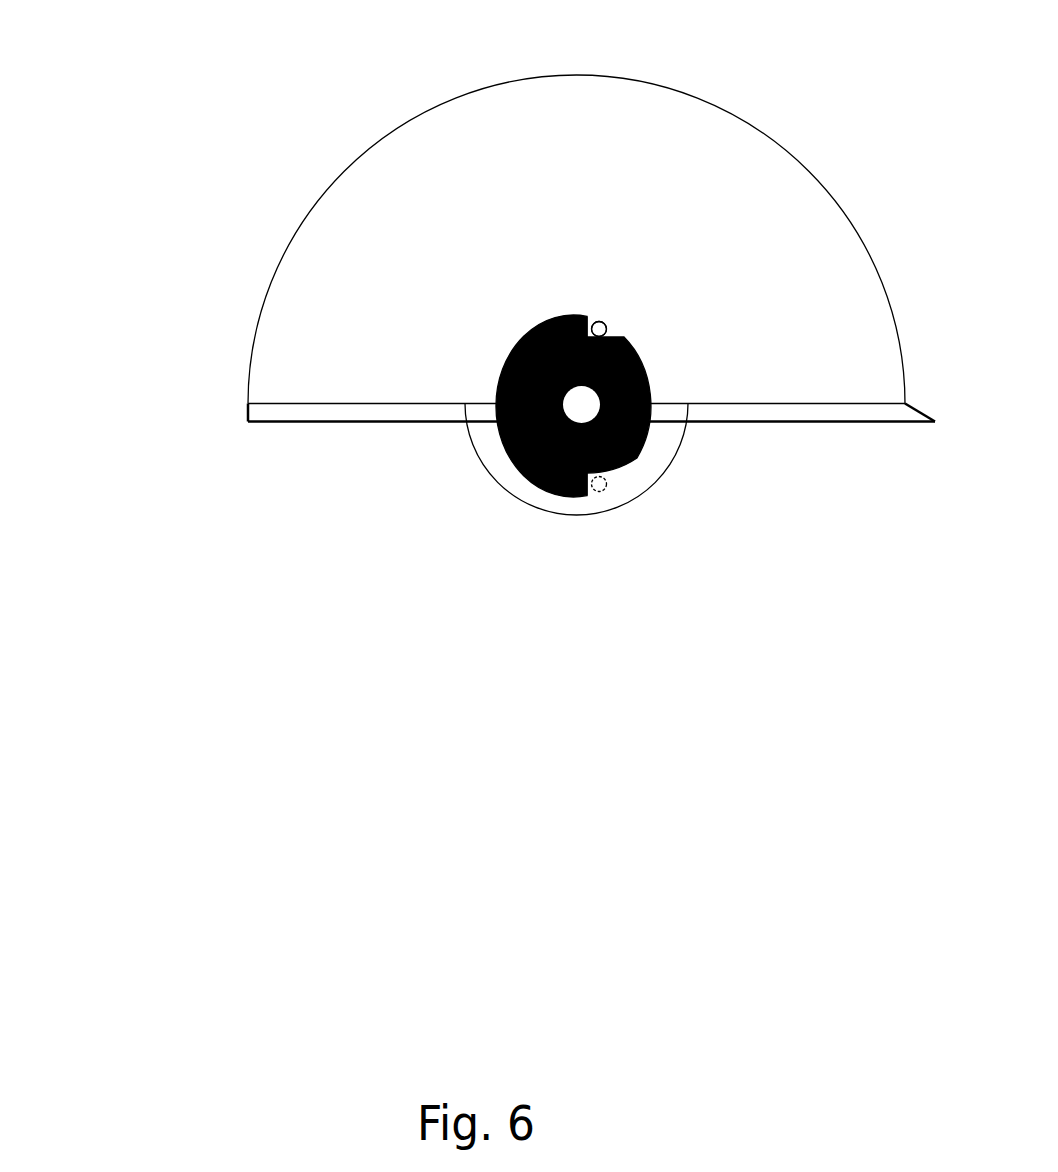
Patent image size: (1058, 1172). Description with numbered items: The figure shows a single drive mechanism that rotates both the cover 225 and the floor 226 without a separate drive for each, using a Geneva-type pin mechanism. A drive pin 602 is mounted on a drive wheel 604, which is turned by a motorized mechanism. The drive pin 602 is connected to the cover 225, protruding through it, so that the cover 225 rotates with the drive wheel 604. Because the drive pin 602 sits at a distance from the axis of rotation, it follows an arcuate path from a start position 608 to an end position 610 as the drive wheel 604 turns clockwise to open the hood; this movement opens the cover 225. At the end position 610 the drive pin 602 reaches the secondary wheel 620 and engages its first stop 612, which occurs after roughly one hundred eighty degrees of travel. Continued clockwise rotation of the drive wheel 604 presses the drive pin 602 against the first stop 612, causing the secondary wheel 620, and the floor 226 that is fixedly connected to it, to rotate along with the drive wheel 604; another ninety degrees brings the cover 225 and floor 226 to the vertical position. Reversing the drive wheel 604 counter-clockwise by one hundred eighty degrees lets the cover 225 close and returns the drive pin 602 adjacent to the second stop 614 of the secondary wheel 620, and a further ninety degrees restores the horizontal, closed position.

The cover 225 is at (612, 45).
The floor 226 is at (248, 421).
The drive wheel 604 is at (477, 452).
The secondary wheel 620 is at (595, 305).
The second stop 614 is at (928, 249).
The first stop 612 is at (905, 595).
The drive pin 602 is at (605, 333).
The start position 608 is at (606, 324).
The end position 610 is at (925, 542).